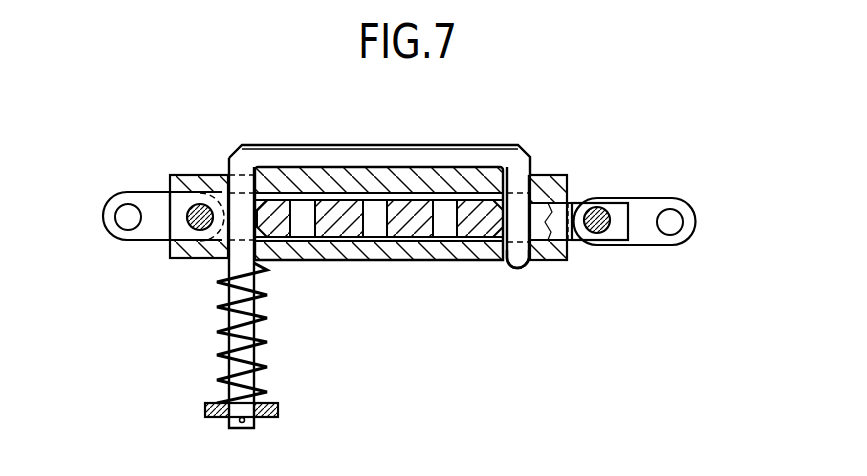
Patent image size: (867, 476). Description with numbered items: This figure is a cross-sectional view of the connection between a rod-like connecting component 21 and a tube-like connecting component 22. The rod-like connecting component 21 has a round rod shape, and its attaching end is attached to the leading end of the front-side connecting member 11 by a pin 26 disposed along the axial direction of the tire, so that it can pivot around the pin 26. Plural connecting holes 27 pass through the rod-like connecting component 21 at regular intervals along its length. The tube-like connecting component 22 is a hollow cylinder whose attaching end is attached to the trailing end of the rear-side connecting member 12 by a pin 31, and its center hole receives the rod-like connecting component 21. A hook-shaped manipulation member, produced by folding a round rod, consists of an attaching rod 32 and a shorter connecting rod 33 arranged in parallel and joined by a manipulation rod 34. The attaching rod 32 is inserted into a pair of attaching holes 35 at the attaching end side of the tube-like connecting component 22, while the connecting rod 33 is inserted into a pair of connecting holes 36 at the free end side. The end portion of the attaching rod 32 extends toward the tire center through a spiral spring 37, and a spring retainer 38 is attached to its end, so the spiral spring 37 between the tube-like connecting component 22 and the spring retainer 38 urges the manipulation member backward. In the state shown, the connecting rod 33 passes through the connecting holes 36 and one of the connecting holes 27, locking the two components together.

The front-side connecting member 11 is at (682, 198).
The rear-side connecting member 12 is at (123, 191).
The rod-like connecting component 21 is at (573, 202).
The tube-like connecting component 22 is at (397, 262).
The pin 26 is at (600, 208).
The connecting holes 27 is at (500, 238).
The pin 31 is at (201, 205).
The attaching rod 32 is at (229, 392).
The connecting rod 33 is at (517, 270).
The manipulation rod 34 is at (370, 145).
The attaching holes 35 is at (242, 176).
The connecting holes 36 is at (530, 197).
The spiral spring 37 is at (267, 318).
The spring retainer 38 is at (278, 410).